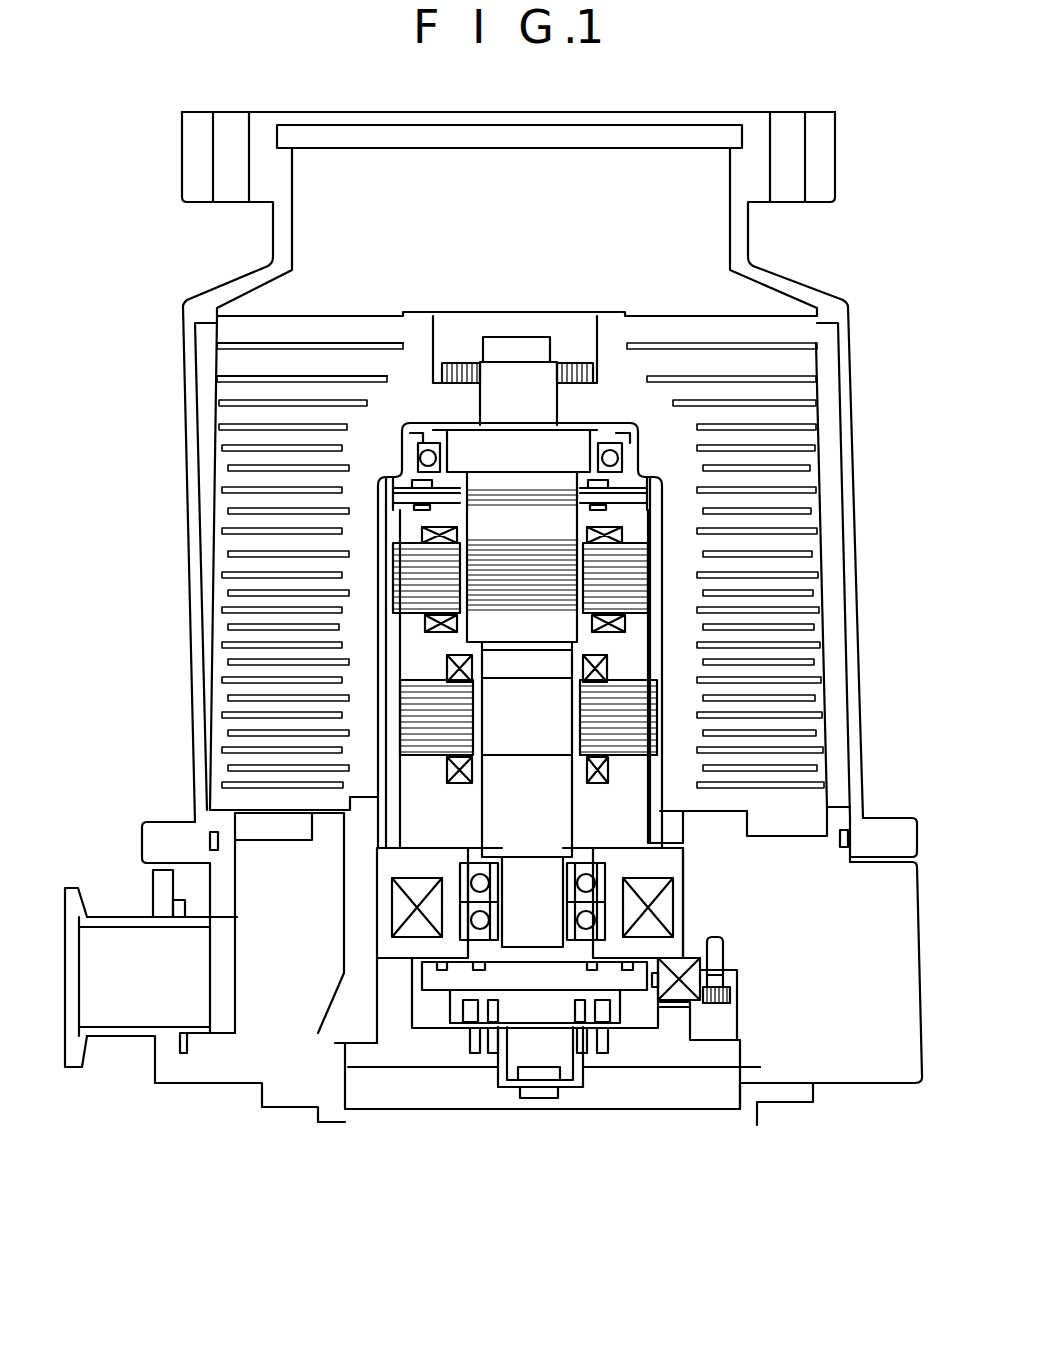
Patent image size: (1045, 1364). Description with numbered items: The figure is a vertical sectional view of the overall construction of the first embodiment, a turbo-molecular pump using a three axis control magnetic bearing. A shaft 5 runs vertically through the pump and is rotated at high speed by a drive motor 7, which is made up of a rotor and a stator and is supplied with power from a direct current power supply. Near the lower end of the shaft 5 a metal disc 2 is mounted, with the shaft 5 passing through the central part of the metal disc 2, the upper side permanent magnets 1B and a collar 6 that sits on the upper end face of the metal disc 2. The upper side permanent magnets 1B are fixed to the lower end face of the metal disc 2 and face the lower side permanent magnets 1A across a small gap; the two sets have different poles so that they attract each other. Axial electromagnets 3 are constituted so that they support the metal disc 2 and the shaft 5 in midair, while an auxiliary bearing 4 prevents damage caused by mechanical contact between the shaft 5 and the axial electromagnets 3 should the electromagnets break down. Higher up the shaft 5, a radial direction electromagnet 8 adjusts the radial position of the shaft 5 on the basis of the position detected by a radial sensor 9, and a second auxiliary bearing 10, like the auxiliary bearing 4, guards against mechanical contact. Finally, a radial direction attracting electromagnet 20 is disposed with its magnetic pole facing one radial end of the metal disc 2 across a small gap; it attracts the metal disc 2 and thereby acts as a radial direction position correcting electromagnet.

The lower side permanent magnets 1A is at (497, 1040).
The upper side permanent magnets 1B is at (580, 1020).
The metal disc 2 is at (607, 975).
The axial electromagnets 3 is at (655, 857).
The auxiliary bearing 4 is at (605, 862).
The shaft 5 is at (585, 858).
The collar 6 is at (587, 940).
The drive motor 7 is at (625, 705).
The radial direction electromagnet 8 is at (633, 578).
The radial sensor 9 is at (630, 487).
The auxiliary bearing 10 is at (632, 432).
The radial direction attracting electromagnet 20 is at (690, 1012).